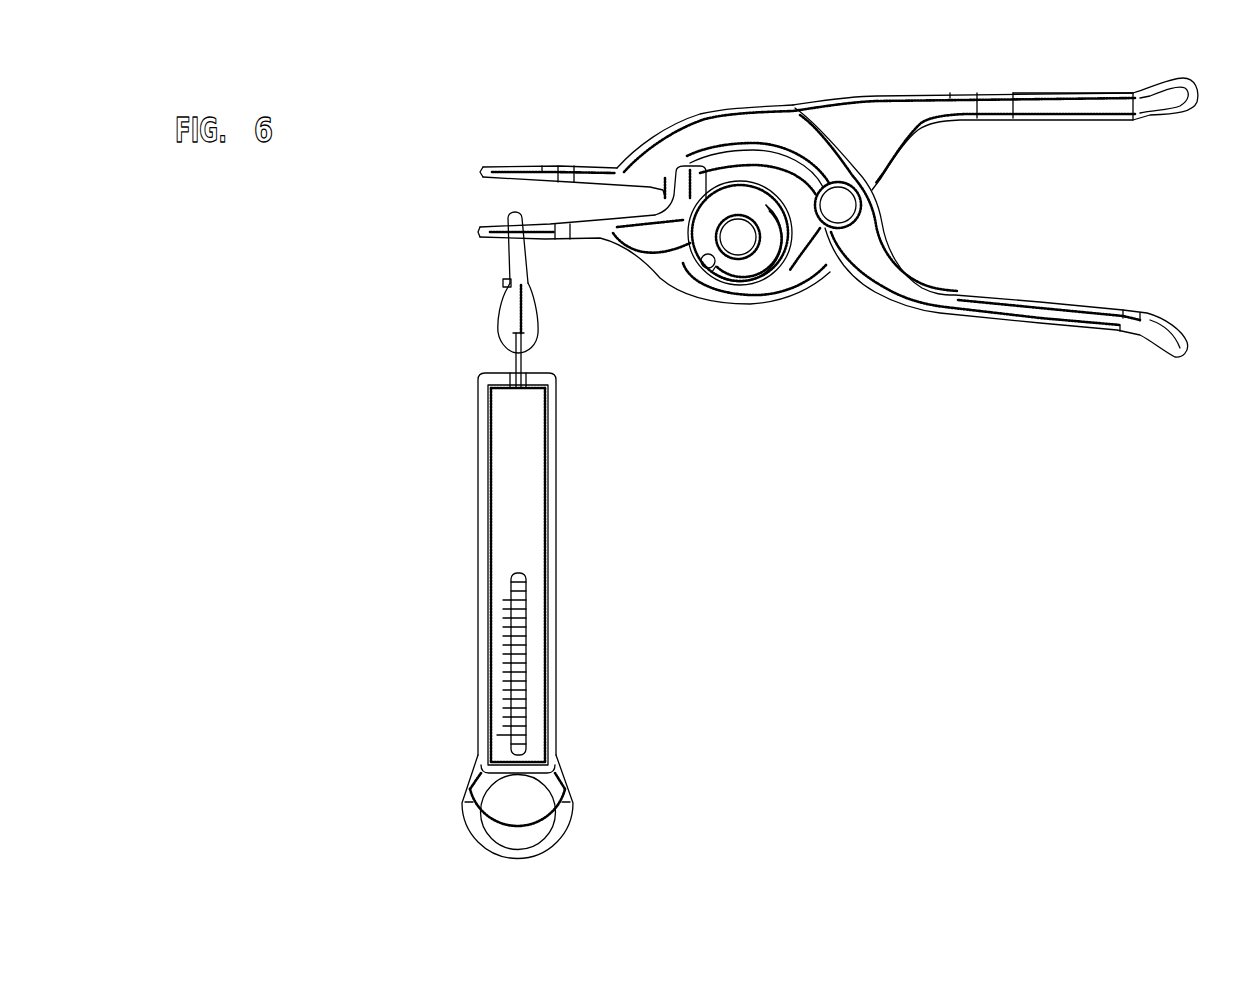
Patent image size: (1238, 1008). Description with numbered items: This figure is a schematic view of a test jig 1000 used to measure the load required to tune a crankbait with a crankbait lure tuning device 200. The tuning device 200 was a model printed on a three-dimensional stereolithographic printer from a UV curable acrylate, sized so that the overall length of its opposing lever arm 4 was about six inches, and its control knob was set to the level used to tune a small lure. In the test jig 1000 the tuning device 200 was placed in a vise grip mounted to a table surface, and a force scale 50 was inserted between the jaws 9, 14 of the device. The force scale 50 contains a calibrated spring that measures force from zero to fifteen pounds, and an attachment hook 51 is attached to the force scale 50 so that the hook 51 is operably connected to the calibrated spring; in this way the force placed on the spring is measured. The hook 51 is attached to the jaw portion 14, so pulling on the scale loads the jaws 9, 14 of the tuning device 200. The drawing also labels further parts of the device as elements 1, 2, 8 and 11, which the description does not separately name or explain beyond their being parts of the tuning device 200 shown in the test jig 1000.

The first plier member (lower body) 1 is at (672, 267).
The second plier member / upper handle 2 is at (818, 101).
The opposing lever arm 4 is at (698, 134).
The upper handle grip 8 is at (1101, 96).
The jaw 9 is at (552, 166).
The lower handle 11 is at (1067, 327).
The jaw portion 14 is at (543, 241).
The force scale 50 is at (558, 622).
The attachment hook 51 is at (519, 260).
The crankbait lure tuning device 200 is at (1003, 222).
The test jig 1000 is at (858, 510).